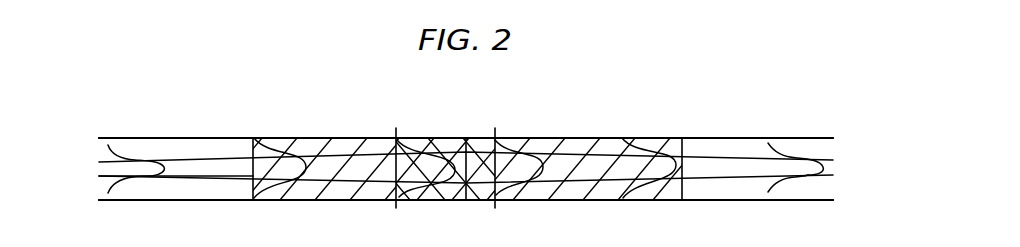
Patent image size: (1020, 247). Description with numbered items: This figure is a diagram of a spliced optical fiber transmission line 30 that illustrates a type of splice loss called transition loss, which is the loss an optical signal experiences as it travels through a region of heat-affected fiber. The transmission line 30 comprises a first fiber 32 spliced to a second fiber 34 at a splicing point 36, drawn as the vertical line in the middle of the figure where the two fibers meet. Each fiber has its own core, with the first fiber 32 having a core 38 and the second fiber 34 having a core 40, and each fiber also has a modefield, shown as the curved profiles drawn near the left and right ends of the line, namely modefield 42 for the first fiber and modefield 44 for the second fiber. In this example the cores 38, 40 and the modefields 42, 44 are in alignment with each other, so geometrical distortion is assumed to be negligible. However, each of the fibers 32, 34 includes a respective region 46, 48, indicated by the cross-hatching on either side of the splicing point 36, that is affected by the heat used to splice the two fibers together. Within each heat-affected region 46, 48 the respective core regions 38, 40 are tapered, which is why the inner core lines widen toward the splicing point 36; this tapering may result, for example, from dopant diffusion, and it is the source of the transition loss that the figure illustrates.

The optical fiber transmission line 30 is at (752, 97).
The first fiber 32 is at (195, 137).
The second fiber 34 is at (708, 137).
The splicing point 36 is at (466, 138).
The core 38 is at (99, 176).
The core 40 is at (833, 200).
The modefield 42 is at (152, 176).
The modefield 44 is at (778, 183).
The heat-affected region 46 is at (338, 137).
The heat-affected region 48 is at (587, 137).